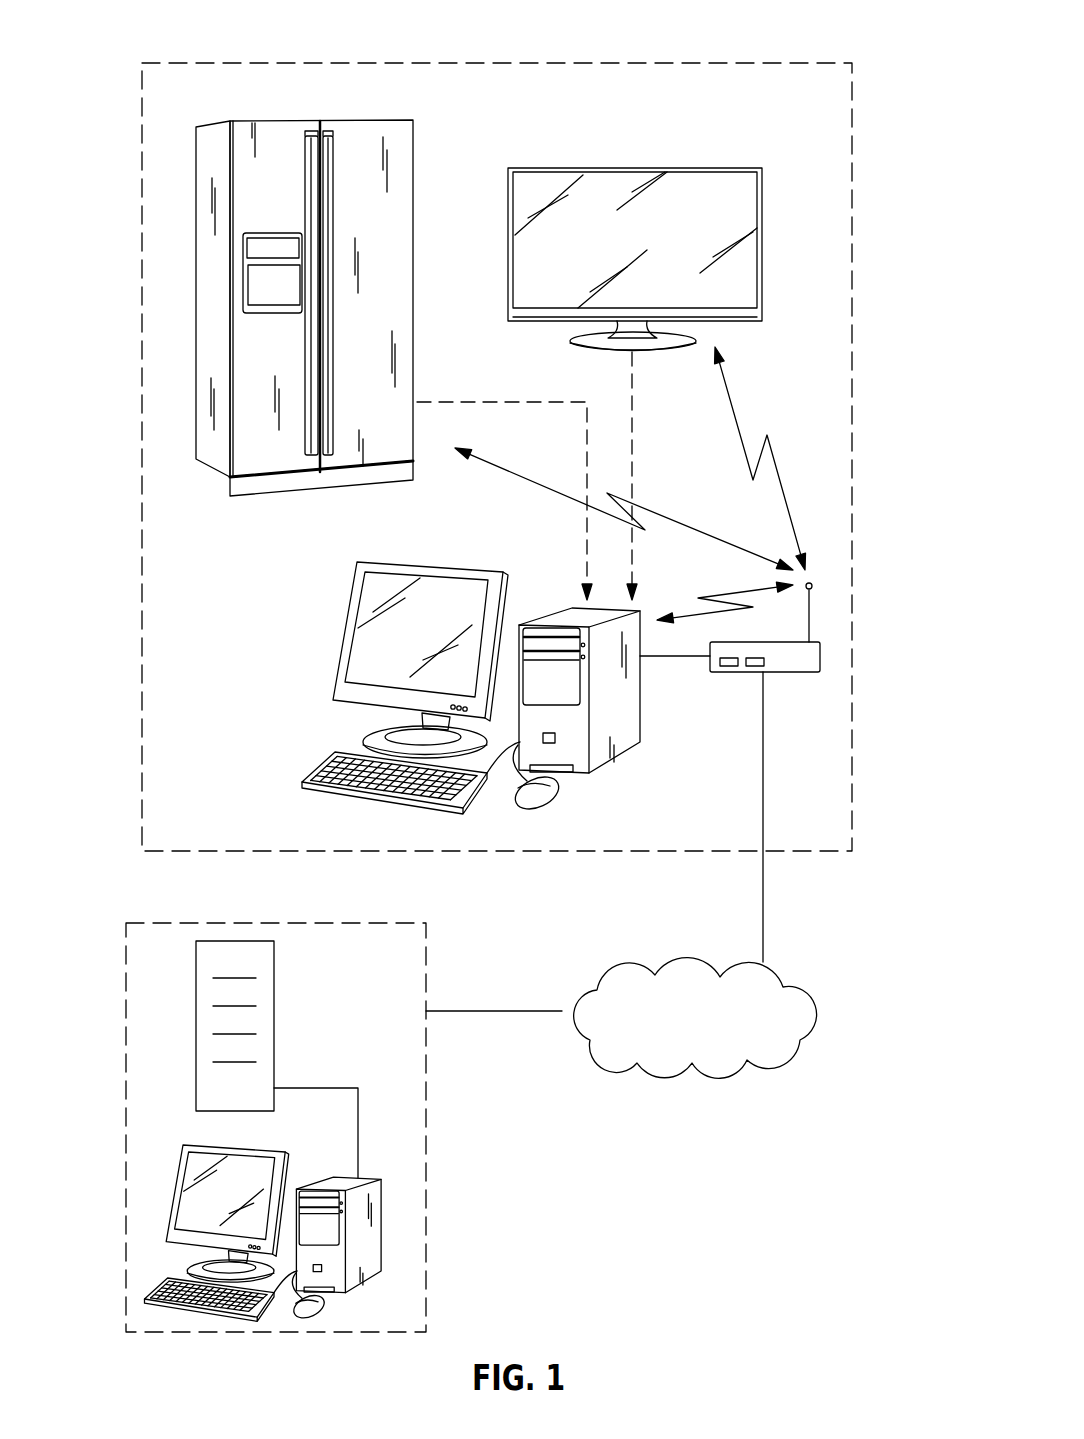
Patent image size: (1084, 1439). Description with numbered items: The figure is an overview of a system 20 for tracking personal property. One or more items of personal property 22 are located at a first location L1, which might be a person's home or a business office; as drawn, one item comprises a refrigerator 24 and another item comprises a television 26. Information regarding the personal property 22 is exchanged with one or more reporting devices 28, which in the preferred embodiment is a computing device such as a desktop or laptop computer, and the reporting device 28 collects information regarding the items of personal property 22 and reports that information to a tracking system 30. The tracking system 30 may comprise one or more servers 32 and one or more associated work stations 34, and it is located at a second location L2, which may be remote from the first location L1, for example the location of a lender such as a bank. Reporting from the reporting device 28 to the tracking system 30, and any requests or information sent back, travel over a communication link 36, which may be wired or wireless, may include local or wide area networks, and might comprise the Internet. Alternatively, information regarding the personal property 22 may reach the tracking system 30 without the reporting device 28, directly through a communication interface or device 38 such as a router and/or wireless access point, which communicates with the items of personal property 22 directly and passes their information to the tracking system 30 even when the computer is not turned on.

The system 20 is at (855, 898).
The personal property 22 is at (566, 84).
The refrigerator 24 is at (365, 134).
The television 26 is at (707, 178).
The reporting device 28 is at (515, 548).
The tracking system 30 is at (142, 1054).
The server 32 is at (276, 992).
The work station 34 is at (384, 1283).
The communication link 36 is at (740, 1074).
The communication interface or device 38 is at (802, 673).
The first location L1 is at (852, 172).
The second location L2 is at (427, 1190).